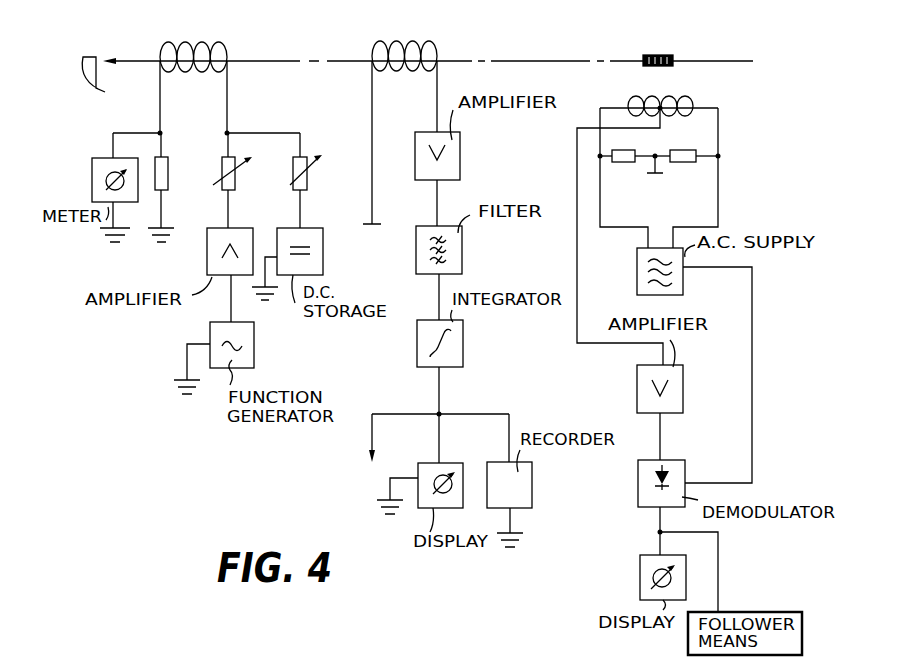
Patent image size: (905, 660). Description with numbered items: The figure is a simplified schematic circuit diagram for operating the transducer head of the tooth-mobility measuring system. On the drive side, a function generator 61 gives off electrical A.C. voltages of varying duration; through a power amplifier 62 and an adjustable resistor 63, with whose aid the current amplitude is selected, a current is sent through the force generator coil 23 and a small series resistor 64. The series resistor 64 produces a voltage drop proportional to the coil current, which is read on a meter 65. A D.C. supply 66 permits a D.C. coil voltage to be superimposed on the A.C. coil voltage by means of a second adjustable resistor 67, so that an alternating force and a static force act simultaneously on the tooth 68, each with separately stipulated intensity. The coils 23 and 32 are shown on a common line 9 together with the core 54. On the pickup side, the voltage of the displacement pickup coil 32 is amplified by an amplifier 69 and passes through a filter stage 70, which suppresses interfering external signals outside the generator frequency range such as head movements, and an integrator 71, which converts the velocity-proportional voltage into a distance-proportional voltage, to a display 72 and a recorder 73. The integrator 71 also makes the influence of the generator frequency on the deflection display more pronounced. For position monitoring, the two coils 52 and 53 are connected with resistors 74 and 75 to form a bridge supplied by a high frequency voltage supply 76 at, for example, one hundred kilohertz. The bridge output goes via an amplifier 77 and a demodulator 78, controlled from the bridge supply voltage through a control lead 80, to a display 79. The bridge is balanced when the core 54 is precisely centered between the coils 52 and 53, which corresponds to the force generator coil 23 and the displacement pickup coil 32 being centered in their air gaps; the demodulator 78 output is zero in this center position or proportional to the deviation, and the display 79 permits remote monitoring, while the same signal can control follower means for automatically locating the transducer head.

The conductor line 9 is at (537, 61).
The force generator coil 23 is at (223, 47).
The displacement pickup coil 32 is at (428, 45).
The coil 52 is at (632, 102).
The coil 53 is at (688, 102).
The core 54 is at (658, 53).
The function generator 61 is at (254, 333).
The power amplifier 62 is at (207, 268).
The adjustable resistor 63 is at (238, 182).
The series resistor 64 is at (165, 163).
The meter 65 is at (92, 183).
The D.C. supply 66 is at (323, 267).
The adjustable resistor 67 is at (308, 179).
The tooth 68 is at (92, 57).
The amplifier 69 is at (460, 163).
The filter stage 70 is at (462, 258).
The integrator 71 is at (463, 352).
The display 72 is at (428, 463).
The recorder 73 is at (532, 478).
The resistor 74 is at (627, 162).
The resistor 75 is at (688, 162).
The high frequency voltage supply 76 is at (683, 288).
The amplifier 77 is at (685, 393).
The demodulator 78 is at (638, 495).
The display 79 is at (640, 573).
The control lead 80 is at (753, 383).